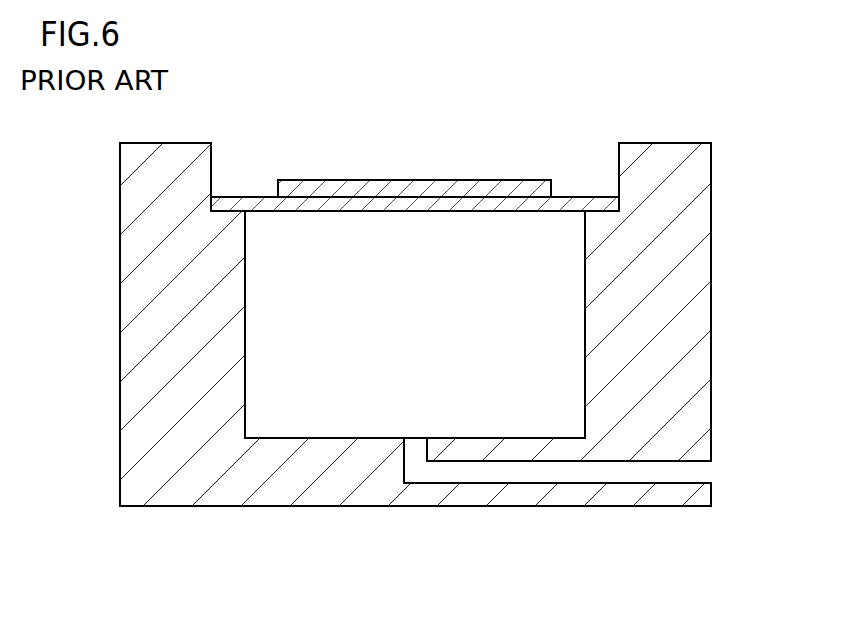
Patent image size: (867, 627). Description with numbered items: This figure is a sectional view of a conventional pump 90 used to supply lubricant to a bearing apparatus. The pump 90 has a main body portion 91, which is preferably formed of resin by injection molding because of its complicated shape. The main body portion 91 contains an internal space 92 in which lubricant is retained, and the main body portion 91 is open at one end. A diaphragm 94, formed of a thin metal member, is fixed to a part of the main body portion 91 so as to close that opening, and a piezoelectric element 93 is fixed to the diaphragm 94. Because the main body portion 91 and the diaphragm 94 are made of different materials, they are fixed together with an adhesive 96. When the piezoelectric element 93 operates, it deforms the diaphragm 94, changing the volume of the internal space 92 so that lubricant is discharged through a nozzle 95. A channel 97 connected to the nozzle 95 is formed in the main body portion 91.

The pump 90 is at (463, 317).
The main body portion 91 is at (697, 212).
The internal space 92 is at (430, 341).
The piezoelectric element 93 is at (410, 190).
The diaphragm 94 is at (352, 206).
The nozzle 95 is at (712, 470).
The adhesive 96 is at (600, 208).
The channel 97 is at (553, 461).